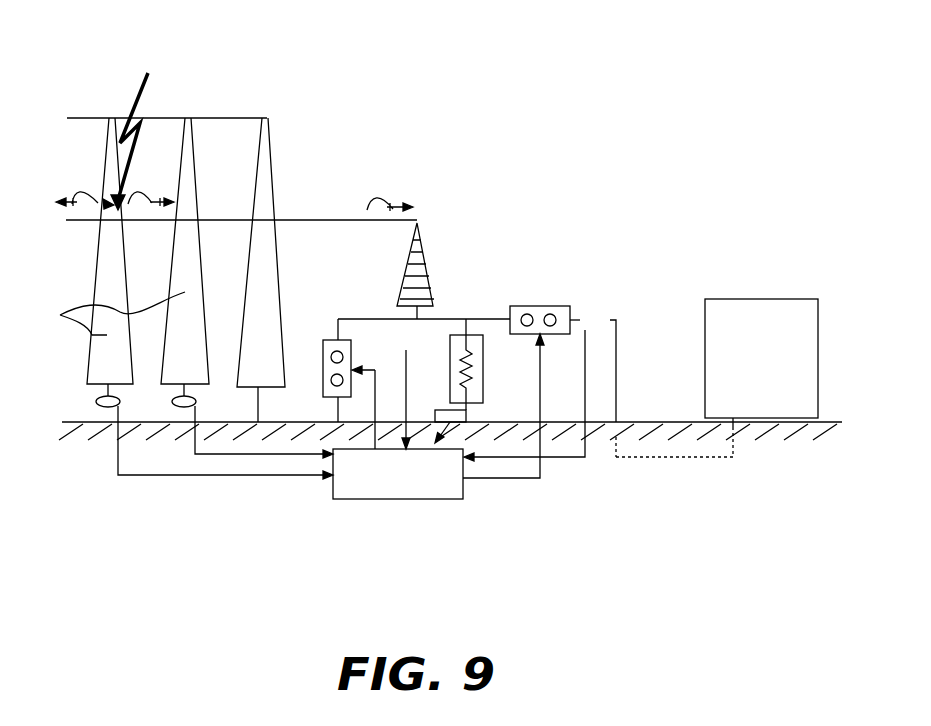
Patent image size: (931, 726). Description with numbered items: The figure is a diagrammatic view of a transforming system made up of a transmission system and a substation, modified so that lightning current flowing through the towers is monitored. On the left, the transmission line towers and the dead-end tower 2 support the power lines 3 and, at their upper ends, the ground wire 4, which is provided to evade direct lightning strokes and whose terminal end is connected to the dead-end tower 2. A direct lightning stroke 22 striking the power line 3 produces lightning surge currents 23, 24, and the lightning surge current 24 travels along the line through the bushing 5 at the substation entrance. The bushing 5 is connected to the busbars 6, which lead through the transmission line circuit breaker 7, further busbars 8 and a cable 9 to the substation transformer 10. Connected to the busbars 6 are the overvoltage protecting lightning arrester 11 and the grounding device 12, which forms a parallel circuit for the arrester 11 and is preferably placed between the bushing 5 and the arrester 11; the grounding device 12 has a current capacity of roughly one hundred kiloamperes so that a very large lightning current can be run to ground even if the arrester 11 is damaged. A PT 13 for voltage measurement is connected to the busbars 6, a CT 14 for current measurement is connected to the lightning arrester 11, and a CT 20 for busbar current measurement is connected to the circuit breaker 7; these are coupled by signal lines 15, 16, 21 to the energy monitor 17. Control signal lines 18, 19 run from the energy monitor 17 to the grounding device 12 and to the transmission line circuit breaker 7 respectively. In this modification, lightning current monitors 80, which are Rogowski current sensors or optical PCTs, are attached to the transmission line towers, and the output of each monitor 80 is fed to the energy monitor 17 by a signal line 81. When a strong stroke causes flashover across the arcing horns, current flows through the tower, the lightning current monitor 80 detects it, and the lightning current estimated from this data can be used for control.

The dead-end tower 2 is at (270, 168).
The power line 3 is at (108, 203).
The ground wire 4 is at (100, 118).
The bushing 5 is at (423, 263).
The busbar 6 is at (492, 316).
The transmission line circuit breaker 7 is at (548, 306).
The busbar 8 is at (617, 322).
The cable 9 is at (700, 458).
The substation transformer 10 is at (778, 299).
The lightning arrester 11 is at (482, 382).
The grounding device 12 is at (333, 395).
The PT 13 is at (403, 372).
The CT 14 is at (490, 427).
The signal line 15 is at (350, 312).
The signal line 16 is at (452, 440).
The energy monitor 17 is at (405, 499).
The control signal line 18 is at (373, 425).
The control signal line 19 is at (548, 480).
The CT 20 is at (590, 305).
The signal line 21 is at (587, 457).
The direct lightning stroke 22 is at (139, 130).
The lightning surge current 23 is at (78, 204).
The lightning surge current 24 is at (150, 205).
The lightning current monitor 80 is at (140, 433).
The signal line 81 is at (163, 477).